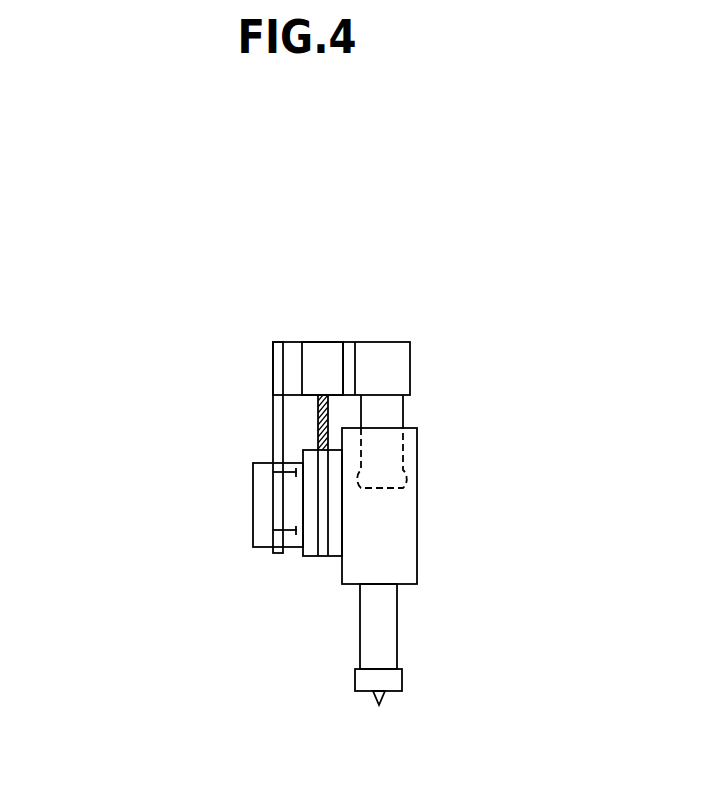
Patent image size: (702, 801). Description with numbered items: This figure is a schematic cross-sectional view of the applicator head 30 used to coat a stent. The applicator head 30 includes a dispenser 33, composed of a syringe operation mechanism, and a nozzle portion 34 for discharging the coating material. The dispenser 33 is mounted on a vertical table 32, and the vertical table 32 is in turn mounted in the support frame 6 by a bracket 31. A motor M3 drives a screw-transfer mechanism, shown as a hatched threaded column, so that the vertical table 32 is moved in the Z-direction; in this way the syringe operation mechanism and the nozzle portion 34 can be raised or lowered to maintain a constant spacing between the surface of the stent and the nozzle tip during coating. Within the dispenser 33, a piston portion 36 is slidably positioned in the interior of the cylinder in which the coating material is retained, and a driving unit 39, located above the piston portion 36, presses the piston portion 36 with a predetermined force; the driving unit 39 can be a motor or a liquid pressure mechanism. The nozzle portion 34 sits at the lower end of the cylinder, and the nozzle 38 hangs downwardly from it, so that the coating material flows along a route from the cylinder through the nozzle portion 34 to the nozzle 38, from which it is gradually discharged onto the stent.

The applicator head 30 is at (87, 293).
The motor M3 is at (322, 352).
The driving unit 39 is at (397, 363).
The bracket 31 is at (272, 383).
The piston portion 36 is at (393, 415).
The dispenser 33 is at (424, 486).
The nozzle portion 34 is at (414, 679).
The nozzle 38 is at (382, 695).
The vertical table 32 is at (335, 550).
The support frame 6 is at (257, 502).